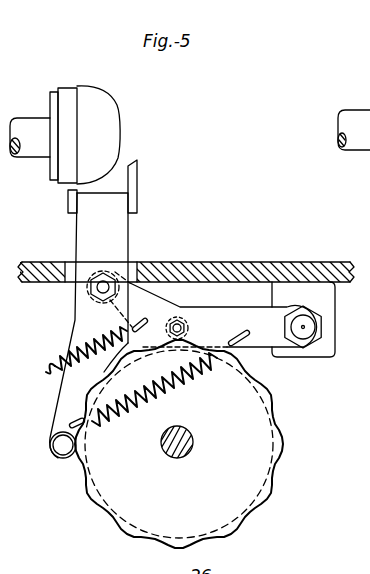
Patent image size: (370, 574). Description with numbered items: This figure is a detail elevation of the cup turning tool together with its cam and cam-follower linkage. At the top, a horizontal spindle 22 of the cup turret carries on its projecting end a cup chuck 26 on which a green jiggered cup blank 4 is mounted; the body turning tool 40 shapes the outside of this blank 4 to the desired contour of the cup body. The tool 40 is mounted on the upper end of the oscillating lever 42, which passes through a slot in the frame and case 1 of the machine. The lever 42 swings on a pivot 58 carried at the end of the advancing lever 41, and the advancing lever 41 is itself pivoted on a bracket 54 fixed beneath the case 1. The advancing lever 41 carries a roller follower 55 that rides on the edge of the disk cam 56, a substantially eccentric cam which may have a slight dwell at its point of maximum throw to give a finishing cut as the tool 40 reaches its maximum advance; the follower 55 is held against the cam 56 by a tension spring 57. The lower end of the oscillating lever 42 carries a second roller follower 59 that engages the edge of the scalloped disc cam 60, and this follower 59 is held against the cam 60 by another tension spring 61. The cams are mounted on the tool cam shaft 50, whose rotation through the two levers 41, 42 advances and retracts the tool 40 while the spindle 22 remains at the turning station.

The frame and case 1 is at (250, 260).
The cup blank 4 is at (103, 92).
The spindle 22 is at (32, 117).
The cup chuck 26 is at (62, 90).
The body turning tool 40 is at (125, 178).
The advancing lever 41 is at (203, 317).
The oscillating lever 42 is at (128, 235).
The tool cam shaft 50 is at (194, 447).
The bracket 54 is at (328, 342).
The roller follower 55 is at (182, 317).
The disk cam 56 is at (263, 487).
The tension spring 57 is at (50, 363).
The pivot 58 is at (92, 290).
The roller follower 59 is at (50, 445).
The scalloped disc cam 60 is at (240, 528).
The tension spring 61 is at (193, 377).